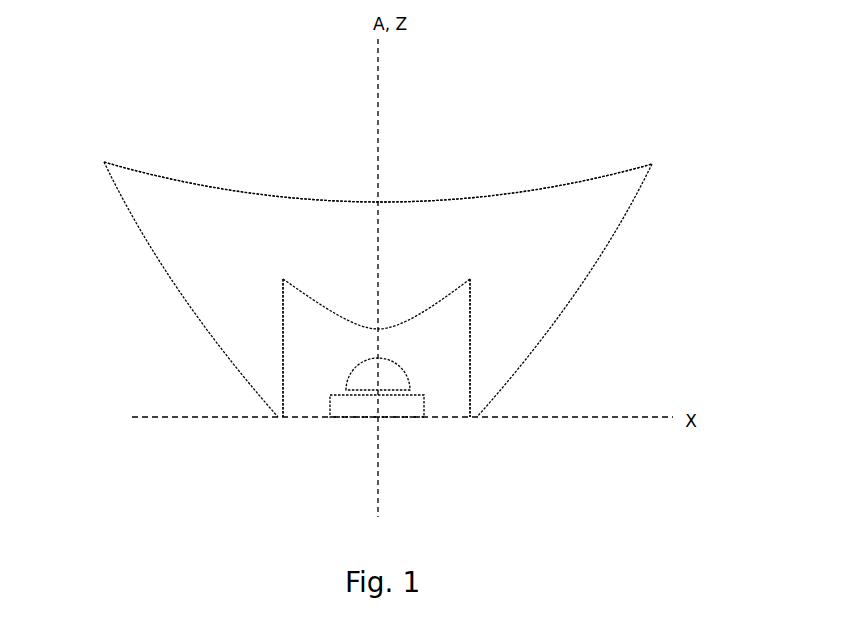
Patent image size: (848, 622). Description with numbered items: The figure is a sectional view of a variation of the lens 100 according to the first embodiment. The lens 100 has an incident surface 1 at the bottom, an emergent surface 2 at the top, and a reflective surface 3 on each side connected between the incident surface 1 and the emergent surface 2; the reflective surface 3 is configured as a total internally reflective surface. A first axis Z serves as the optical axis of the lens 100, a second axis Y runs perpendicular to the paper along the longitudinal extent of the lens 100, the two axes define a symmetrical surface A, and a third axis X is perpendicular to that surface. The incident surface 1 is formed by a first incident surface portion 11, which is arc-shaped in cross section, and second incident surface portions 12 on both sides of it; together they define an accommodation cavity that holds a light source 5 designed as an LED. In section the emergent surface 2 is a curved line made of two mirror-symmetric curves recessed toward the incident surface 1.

The lens 100 is at (198, 96).
The incident surface 1 is at (425, 357).
The emergent surface 2 is at (487, 195).
The reflective surface 3 is at (172, 278).
The light source 5 is at (383, 395).
The first incident surface portion 11 is at (322, 306).
The second incident surface portions 12 is at (283, 370).